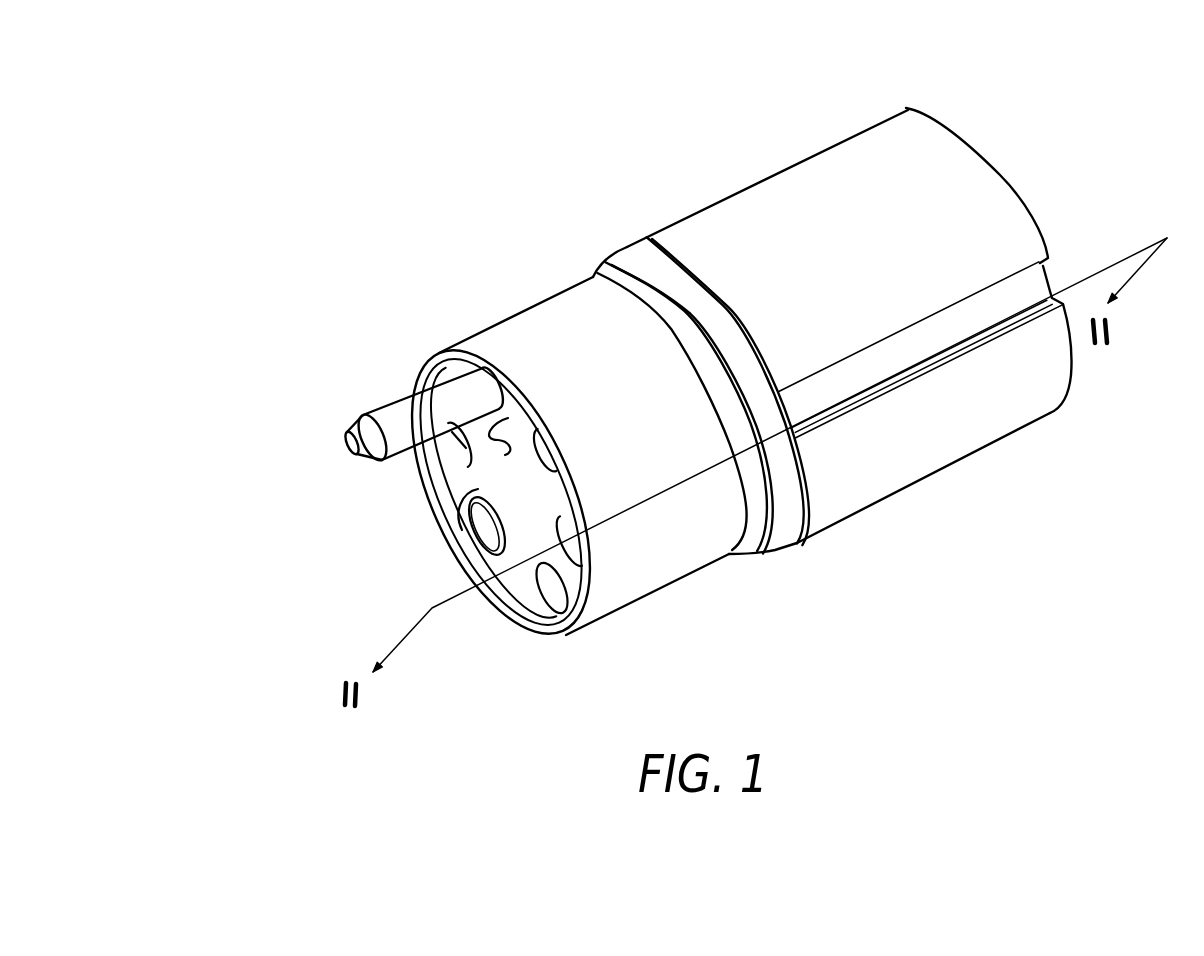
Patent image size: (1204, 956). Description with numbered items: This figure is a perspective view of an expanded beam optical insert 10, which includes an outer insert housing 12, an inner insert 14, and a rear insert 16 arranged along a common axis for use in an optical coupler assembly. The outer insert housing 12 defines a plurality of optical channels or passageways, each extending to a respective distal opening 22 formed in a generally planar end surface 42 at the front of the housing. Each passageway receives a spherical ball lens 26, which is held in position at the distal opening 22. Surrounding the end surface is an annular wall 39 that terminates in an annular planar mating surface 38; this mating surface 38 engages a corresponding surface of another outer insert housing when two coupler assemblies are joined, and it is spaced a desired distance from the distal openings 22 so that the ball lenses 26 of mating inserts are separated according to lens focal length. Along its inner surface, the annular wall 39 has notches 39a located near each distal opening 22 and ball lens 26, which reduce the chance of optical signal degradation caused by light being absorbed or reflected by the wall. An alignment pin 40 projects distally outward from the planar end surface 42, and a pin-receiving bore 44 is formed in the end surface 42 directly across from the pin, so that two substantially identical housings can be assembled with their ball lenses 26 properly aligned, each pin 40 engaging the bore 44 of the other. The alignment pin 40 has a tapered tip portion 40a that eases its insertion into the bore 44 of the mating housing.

The expanded beam optical insert 10 is at (530, 104).
The outer insert housing 12 is at (522, 329).
The inner insert 14 is at (645, 263).
The rear insert 16 is at (732, 200).
The distal opening 22 is at (452, 493).
The spherical ball lens 26 is at (430, 479).
The annular planar mating surface 38 is at (428, 365).
The annular wall 39 is at (488, 594).
The notch 39a is at (458, 551).
The alignment pin 40 is at (388, 405).
The tapered tip portion 40a is at (330, 430).
The planar end surface 42 is at (509, 403).
The pin-receiving bore 44 is at (542, 588).